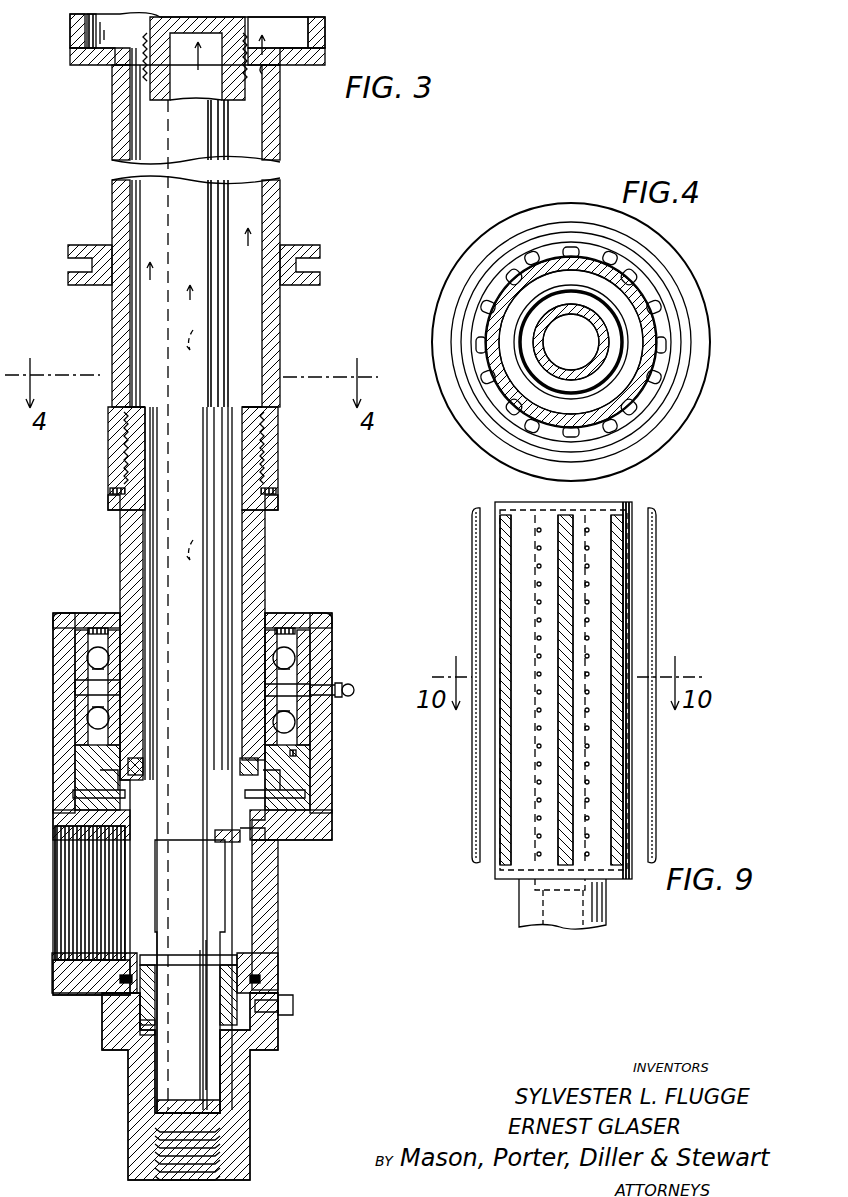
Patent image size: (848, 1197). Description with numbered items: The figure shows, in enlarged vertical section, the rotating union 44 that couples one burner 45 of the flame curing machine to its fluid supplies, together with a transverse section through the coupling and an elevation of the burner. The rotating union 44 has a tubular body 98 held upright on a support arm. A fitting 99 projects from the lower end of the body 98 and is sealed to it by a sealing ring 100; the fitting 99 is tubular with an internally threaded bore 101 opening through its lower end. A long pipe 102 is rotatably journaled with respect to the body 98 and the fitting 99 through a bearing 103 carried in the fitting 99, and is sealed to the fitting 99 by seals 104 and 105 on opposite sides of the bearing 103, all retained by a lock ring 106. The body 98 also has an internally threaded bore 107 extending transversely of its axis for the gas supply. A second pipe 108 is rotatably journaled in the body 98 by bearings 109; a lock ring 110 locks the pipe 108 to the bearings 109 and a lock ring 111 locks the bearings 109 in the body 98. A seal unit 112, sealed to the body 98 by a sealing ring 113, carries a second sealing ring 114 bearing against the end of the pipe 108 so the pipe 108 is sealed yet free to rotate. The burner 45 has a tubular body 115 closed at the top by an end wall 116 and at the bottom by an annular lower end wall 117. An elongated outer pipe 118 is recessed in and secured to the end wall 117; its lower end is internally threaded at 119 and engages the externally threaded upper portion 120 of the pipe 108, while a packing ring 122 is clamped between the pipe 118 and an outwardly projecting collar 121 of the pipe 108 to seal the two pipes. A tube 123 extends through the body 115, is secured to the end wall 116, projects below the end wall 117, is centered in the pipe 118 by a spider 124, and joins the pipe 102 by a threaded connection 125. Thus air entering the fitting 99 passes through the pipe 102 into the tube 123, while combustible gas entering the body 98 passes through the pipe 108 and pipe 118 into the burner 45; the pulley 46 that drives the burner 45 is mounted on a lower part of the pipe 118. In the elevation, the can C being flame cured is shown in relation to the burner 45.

In FIG. 3, the rotating union 44 is at (278, 590).
In FIG. 4, the rotating union 44 is at (436, 412).
In FIG. 9, the burner 45 is at (630, 588).
In FIG. 3, the pulley 46 is at (300, 288).
In FIG. 3, the tubular body 98 is at (278, 890).
In FIG. 4, the tubular body 98 is at (698, 326).
In FIG. 3, the fitting 99 is at (240, 1068).
In FIG. 3, the sealing ring 100 is at (262, 990).
In FIG. 3, the internally threaded bore 101 is at (210, 1183).
In FIG. 3, the pipe 102 is at (230, 918).
In FIG. 4, the pipe 102 is at (578, 370).
In FIG. 3, the bearing 103 is at (256, 1022).
In FIG. 3, the seal 104 is at (142, 1030).
In FIG. 3, the seal 105 is at (140, 990).
In FIG. 3, the lock ring 106 is at (228, 970).
In FIG. 3, the internally threaded bore 107 is at (68, 960).
In FIG. 3, the second pipe 108 is at (258, 545).
In FIG. 4, the second pipe 108 is at (530, 392).
In FIG. 3, the bearings 109 is at (302, 645).
In FIG. 4, the bearings 109 is at (638, 272).
In FIG. 3, the lock ring 110 is at (274, 764).
In FIG. 3, the lock ring 111 is at (292, 634).
In FIG. 4, the lock ring 111 is at (668, 296).
In FIG. 3, the seal unit 112 is at (228, 843).
In FIG. 3, the sealing ring 113 is at (268, 832).
In FIG. 3, the second sealing ring 114 is at (242, 762).
In FIG. 3, the tubular body 115 is at (70, 27).
In FIG. 9, the tubular body 115 is at (634, 548).
In FIG. 9, the end wall 116 is at (632, 506).
In FIG. 3, the lower end wall 117 is at (94, 62).
In FIG. 3, the outer pipe 118 is at (280, 216).
In FIG. 4, the outer pipe 118 is at (540, 272).
In FIG. 9, the outer pipe 118 is at (520, 910).
In FIG. 3, the internal threads 119 is at (272, 412).
In FIG. 3, the externally threaded upper portion 120 is at (269, 448).
In FIG. 3, the collar 121 is at (278, 500).
In FIG. 3, the packing ring 122 is at (280, 490).
In FIG. 3, the tube 123 is at (142, 36).
In FIG. 9, the tube 123 is at (535, 775).
In FIG. 3, the spider 124 is at (258, 66).
In FIG. 3, the threaded connection 125 is at (182, 66).
In FIG. 9, the casing C is at (648, 612).